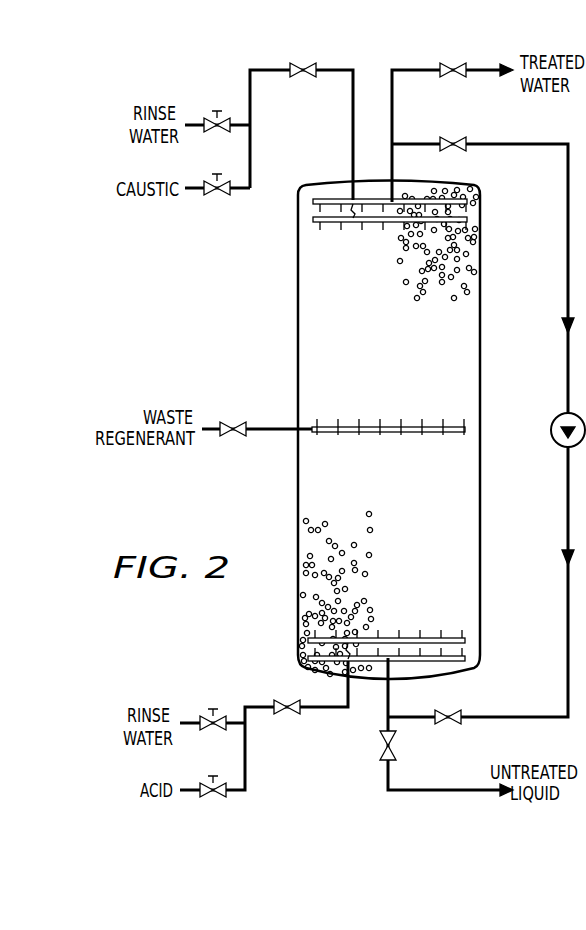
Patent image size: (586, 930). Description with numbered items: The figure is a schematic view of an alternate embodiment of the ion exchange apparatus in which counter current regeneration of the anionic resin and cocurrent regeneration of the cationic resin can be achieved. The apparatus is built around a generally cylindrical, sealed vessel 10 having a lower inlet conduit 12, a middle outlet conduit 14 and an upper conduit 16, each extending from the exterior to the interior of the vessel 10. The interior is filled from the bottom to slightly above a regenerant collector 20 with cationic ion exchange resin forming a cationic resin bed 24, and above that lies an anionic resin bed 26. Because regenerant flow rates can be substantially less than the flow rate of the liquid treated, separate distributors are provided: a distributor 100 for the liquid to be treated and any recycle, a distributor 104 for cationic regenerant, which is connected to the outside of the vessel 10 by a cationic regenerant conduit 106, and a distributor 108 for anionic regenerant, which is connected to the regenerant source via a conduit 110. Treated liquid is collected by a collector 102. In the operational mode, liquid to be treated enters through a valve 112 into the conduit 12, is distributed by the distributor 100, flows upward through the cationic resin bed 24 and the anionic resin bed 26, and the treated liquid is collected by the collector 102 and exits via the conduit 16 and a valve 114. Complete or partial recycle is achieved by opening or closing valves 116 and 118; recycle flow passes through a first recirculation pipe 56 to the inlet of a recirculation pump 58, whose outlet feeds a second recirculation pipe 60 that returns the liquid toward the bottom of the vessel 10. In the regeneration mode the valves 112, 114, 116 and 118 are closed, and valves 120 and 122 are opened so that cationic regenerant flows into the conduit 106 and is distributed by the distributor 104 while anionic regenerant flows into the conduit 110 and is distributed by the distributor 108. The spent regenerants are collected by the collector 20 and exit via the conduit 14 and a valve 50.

The vessel 10 is at (483, 261).
The lower inlet conduit 12 is at (390, 690).
The middle outlet conduit 14 is at (272, 433).
The upper conduit 16 is at (394, 168).
The regenerant collector 20 is at (388, 426).
The cationic resin bed 24 is at (402, 319).
The anionic resin bed 26 is at (400, 549).
The valve 50 is at (240, 421).
The first recirculation pipe 56 is at (567, 229).
The recirculation pump 58 is at (556, 417).
The second recirculation pipe 60 is at (567, 599).
The distributor 100 is at (466, 660).
The collector 102 is at (313, 201).
The distributor 104 is at (466, 641).
The cationic regenerant conduit 106 is at (336, 709).
The distributor 108 is at (313, 219).
The conduit 110 is at (351, 160).
The valve 112 is at (397, 742).
The valve 114 is at (452, 78).
The valve 116 is at (458, 136).
The valve 118 is at (456, 708).
The valve 120 is at (288, 715).
The valve 122 is at (300, 78).